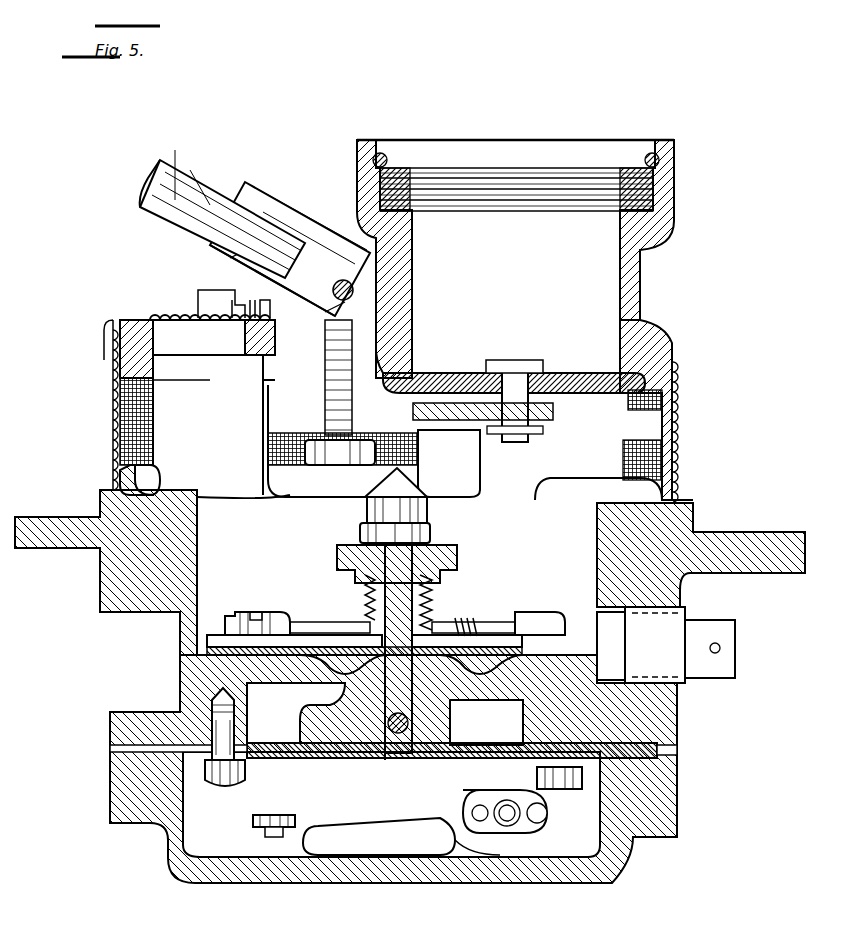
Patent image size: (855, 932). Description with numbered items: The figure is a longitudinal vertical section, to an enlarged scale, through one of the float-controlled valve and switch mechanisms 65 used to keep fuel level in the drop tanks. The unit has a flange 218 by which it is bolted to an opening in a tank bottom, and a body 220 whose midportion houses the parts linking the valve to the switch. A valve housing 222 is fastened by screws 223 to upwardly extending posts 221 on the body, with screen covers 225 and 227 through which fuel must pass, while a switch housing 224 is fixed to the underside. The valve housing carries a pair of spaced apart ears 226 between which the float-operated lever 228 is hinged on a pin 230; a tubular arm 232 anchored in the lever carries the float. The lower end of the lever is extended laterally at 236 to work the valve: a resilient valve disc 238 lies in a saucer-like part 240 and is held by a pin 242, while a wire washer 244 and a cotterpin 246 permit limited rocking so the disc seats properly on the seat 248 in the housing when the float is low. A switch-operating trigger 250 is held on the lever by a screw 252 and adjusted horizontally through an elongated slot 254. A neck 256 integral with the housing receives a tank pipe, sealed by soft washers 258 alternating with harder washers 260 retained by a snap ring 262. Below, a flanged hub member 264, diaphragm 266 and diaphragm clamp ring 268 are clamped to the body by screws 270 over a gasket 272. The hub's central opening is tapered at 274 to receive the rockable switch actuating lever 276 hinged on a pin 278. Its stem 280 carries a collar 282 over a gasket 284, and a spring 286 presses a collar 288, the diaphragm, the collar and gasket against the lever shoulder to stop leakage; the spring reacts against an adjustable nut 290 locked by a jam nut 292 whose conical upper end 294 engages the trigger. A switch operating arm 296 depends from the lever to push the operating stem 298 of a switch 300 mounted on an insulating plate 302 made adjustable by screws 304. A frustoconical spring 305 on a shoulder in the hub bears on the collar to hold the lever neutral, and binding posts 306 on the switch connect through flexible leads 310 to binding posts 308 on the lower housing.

The float-controlled valve and switch mechanism 65 is at (722, 124).
The flange 218 is at (740, 538).
The body 220 is at (665, 725).
The upwardly extending posts 221 is at (115, 398).
The valve housing 222 is at (674, 350).
The screws 223 is at (215, 278).
The switch housing 224 is at (675, 815).
The screen cover 225 is at (157, 318).
The spaced apart ears 226 is at (335, 237).
The screen cover 227 is at (112, 428).
The float-operated lever 228 is at (385, 250).
The pin 230 is at (373, 300).
The tubular arm 232 is at (228, 152).
The lever extension 236 is at (555, 415).
The resilient valve disc 238 is at (562, 373).
The saucer-like part 240 is at (598, 445).
The pin 242 is at (515, 445).
The wire washer 244 is at (449, 460).
The cotterpin 246 is at (545, 433).
The seat 248 is at (660, 335).
The switch-operating trigger 250 is at (449, 445).
The screw 252 is at (369, 441).
The elongated slot 254 is at (340, 468).
The neck 256 is at (640, 258).
The washers 258 is at (410, 172).
The washers 260 is at (386, 168).
The snap ring 262 is at (378, 153).
The flanged hub member 264 is at (486, 722).
The diaphragm 266 is at (210, 647).
The diaphragm clamp ring 268 is at (218, 628).
The screws 270 is at (265, 608).
The gasket 272 is at (207, 668).
The tapered central opening 274 is at (300, 758).
The switch actuating lever 276 is at (342, 758).
The pin 278 is at (375, 745).
The stem 280 is at (368, 612).
The collar 282 is at (455, 638).
The gasket 284 is at (393, 773).
The spring 286 is at (435, 605).
The collar 288 is at (340, 622).
The nut 290 is at (455, 570).
The jam nut 292 is at (432, 535).
The upper end of jam nut 294 is at (440, 478).
The switch operating arm 296 is at (440, 778).
The operating stem 298 is at (410, 790).
The switch 300 is at (393, 798).
The insulating plate 302 is at (486, 722).
The screws 304 is at (535, 800).
The frustoconical spring 305 is at (343, 700).
The binding posts 306 is at (275, 815).
The binding posts 308 is at (540, 822).
The flexible leads 310 is at (515, 845).